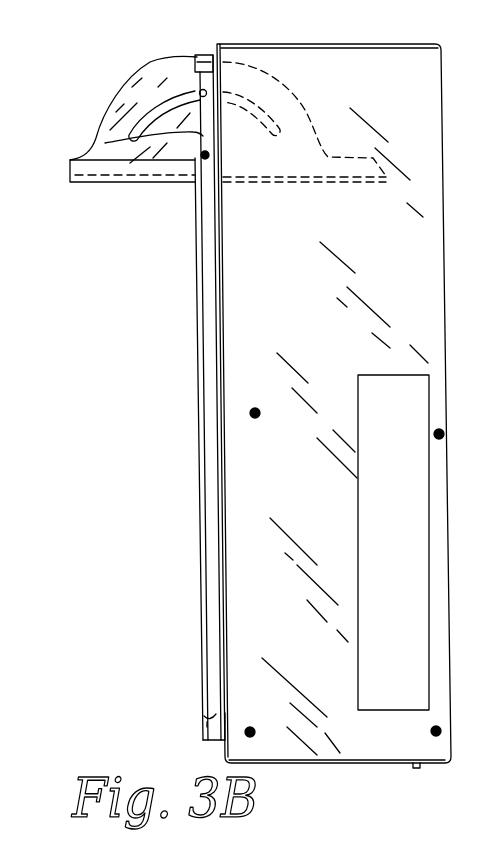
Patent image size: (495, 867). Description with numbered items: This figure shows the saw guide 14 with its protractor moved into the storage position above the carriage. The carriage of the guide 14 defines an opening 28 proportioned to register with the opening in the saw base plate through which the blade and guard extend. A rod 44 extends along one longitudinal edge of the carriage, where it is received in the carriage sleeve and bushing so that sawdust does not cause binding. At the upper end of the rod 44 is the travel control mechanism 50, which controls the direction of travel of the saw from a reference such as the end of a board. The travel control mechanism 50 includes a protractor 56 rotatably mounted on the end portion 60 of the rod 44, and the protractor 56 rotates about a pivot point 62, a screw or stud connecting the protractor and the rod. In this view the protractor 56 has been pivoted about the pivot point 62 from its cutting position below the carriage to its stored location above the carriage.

The saw guide 14 is at (276, 503).
The opening 28 is at (413, 374).
The rod 44 is at (205, 285).
The travel control mechanism 50 is at (166, 165).
The protractor 56 is at (124, 93).
The end portion 60 is at (105, 143).
The pivot point 62 is at (205, 155).